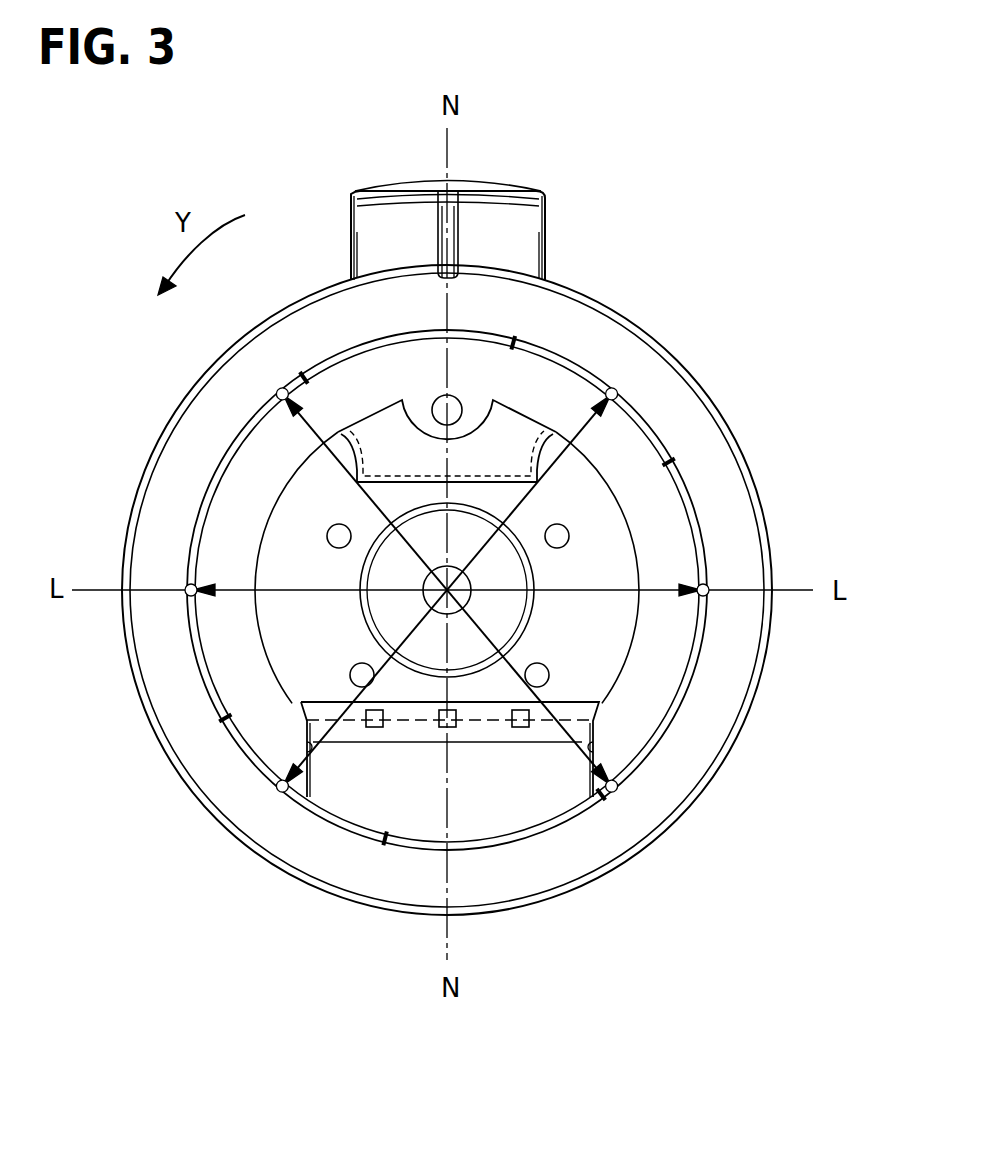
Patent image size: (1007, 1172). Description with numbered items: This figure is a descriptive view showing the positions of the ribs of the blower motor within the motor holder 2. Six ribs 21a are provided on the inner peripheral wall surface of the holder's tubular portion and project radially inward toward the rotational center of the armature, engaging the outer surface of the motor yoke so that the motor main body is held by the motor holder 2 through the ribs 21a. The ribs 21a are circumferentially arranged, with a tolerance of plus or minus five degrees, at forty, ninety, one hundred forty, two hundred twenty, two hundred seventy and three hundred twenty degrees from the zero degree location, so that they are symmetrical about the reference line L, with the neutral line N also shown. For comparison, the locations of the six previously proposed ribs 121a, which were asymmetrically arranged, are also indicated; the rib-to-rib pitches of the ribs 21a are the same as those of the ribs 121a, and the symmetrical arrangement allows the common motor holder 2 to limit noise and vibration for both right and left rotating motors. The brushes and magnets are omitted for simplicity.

The motor holder 2 is at (553, 353).
The ribs 21a is at (280, 392).
The previously proposed ribs 121a is at (513, 340).